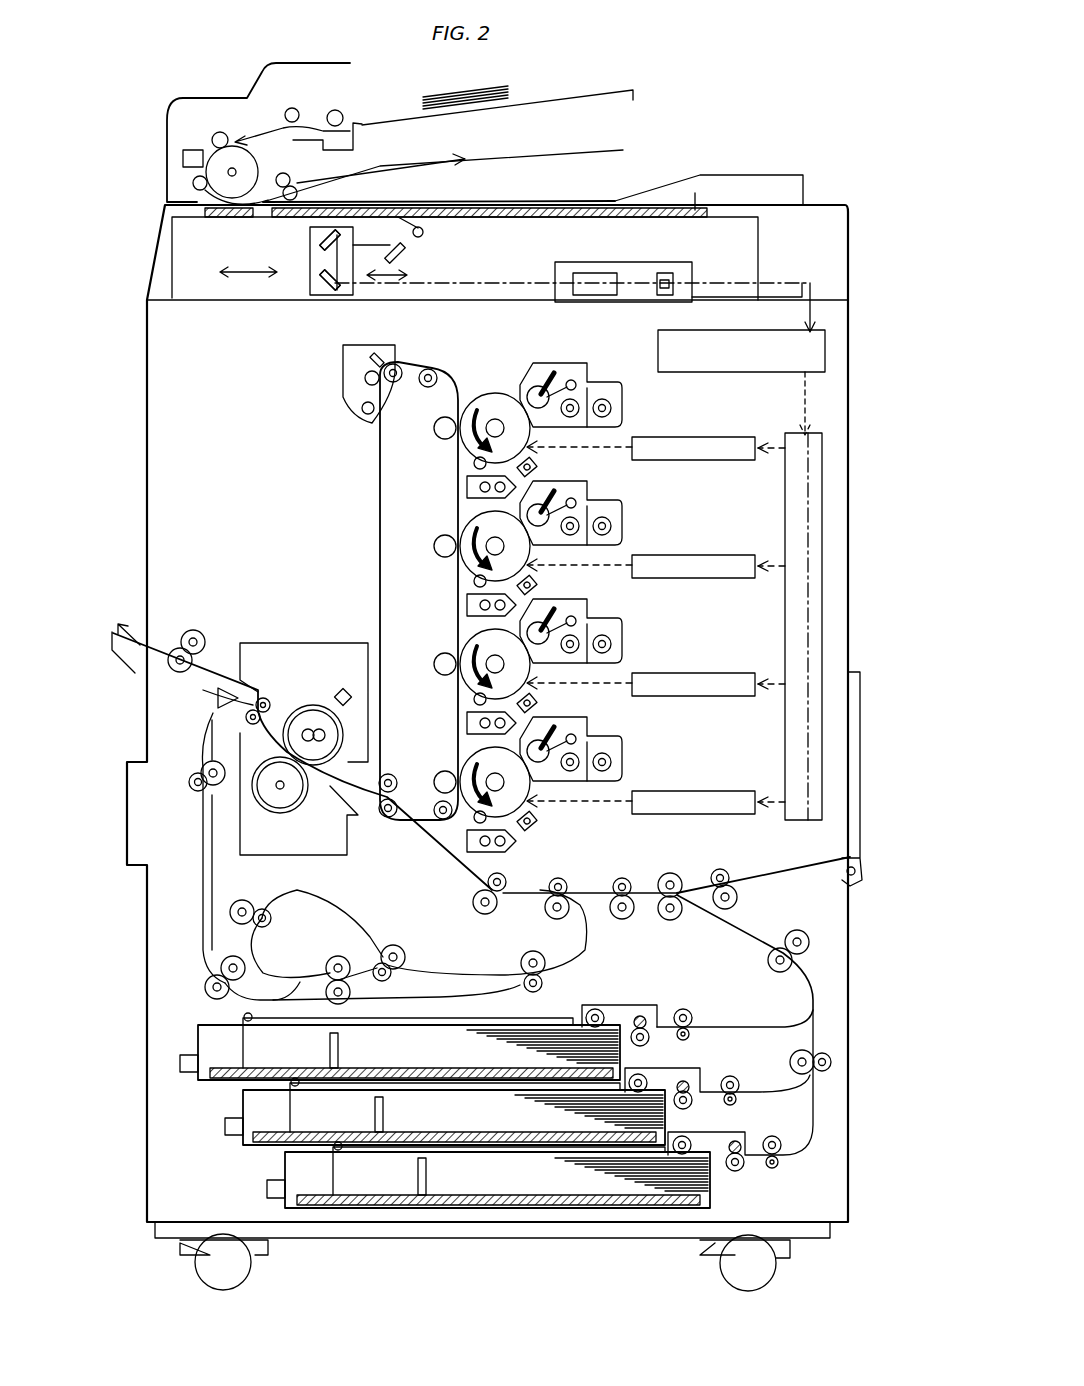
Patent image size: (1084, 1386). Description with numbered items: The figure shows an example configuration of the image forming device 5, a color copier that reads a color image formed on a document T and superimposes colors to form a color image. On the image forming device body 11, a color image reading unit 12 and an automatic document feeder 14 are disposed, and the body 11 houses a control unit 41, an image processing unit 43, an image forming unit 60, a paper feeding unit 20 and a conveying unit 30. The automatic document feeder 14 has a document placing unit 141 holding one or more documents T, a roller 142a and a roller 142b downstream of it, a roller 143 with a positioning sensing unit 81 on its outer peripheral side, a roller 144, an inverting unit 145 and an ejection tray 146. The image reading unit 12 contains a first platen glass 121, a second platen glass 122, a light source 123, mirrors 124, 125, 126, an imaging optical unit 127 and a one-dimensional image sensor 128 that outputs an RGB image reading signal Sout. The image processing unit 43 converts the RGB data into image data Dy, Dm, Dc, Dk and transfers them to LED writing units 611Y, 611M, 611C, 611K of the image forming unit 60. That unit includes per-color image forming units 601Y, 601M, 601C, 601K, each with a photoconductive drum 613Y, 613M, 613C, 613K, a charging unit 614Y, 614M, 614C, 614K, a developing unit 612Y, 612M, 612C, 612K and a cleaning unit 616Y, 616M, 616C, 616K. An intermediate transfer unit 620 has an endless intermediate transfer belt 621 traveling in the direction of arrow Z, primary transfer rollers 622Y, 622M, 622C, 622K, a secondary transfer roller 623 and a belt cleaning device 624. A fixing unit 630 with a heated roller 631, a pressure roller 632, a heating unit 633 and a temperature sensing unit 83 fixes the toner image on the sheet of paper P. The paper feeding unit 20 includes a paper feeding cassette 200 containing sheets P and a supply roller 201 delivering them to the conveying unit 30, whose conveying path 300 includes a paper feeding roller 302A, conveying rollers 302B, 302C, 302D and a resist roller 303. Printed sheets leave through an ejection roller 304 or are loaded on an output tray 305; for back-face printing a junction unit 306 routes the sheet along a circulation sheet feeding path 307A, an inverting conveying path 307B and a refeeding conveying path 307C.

The image forming device 5 is at (160, 50).
The image forming device body 11 is at (850, 340).
The color image reading unit 12 is at (820, 215).
The automatic document feeder 14 is at (655, 94).
The paper feeding unit 20 is at (495, 1082).
The conveying unit 30 is at (165, 927).
The control unit 41 is at (803, 370).
The image processing unit 43 is at (815, 562).
The image forming unit 60 is at (822, 447).
The positioning sensing unit 81 is at (170, 176).
The temperature sensing unit 83 is at (346, 690).
The first platen glass 121 is at (690, 188).
The second platen glass 122 is at (222, 217).
The light source 123 is at (424, 232).
The mirror 124 is at (408, 258).
The mirror 125 is at (318, 240).
The mirror 126 is at (328, 300).
The imaging optical unit 127 is at (597, 280).
The image sensor 128 is at (672, 281).
The document placing unit 141 is at (533, 99).
The roller 142a is at (345, 112).
The roller 142b is at (298, 110).
The roller 143 is at (213, 148).
The roller 144 is at (300, 176).
The inverting unit 145 is at (503, 200).
The ejection tray 146 is at (560, 150).
The paper feeding cassette 200 is at (196, 1070).
The supply roller 201 is at (625, 1008).
The conveying path 300 is at (742, 878).
The paper feeding roller 302A is at (694, 1016).
The conveying roller 302B is at (827, 1072).
The conveying roller 302C is at (632, 920).
The conveying roller 302D is at (628, 878).
The resist roller 303 is at (487, 913).
The ejection roller 304 is at (188, 630).
The output tray 305 is at (128, 675).
The junction unit 306 is at (215, 710).
The circulation sheet feeding path 307A is at (207, 850).
The inverting conveying path 307B is at (668, 992).
The refeeding conveying path 307C is at (385, 955).
The image forming unit 601Y is at (600, 372).
The image forming unit 601M is at (604, 496).
The image forming unit 601C is at (604, 617).
The image forming unit 601K is at (604, 736).
The LED writing unit 611Y is at (730, 437).
The LED writing unit 611M is at (735, 553).
The LED writing unit 611C is at (733, 671).
The LED writing unit 611K is at (733, 789).
The developing unit 612Y is at (622, 410).
The developing unit 612M is at (625, 530).
The developing unit 612C is at (627, 648).
The developing unit 612K is at (627, 766).
The photoconductive drum 613Y is at (490, 400).
The photoconductive drum 613M is at (480, 525).
The photoconductive drum 613C is at (475, 640).
The photoconductive drum 613K is at (478, 758).
The charging unit 614Y is at (538, 470).
The charging unit 614M is at (538, 588).
The charging unit 614C is at (538, 706).
The charging unit 614K is at (538, 824).
The cleaning unit 616Y is at (462, 478).
The cleaning unit 616M is at (465, 598).
The cleaning unit 616C is at (465, 712).
The cleaning unit 616K is at (465, 852).
The intermediate transfer unit 620 is at (370, 591).
The intermediate transfer belt 621 is at (380, 500).
The primary transfer roller 622Y is at (440, 430).
The primary transfer roller 622M is at (440, 546).
The primary transfer roller 622C is at (440, 664).
The primary transfer roller 622K is at (440, 782).
The secondary transfer roller 623 is at (385, 820).
The belt cleaning device 624 is at (348, 422).
The fixing unit 630 is at (304, 718).
The heated roller 631 is at (318, 712).
The pressure roller 632 is at (302, 808).
The heating unit 633 is at (306, 728).
The yellow image data Dy is at (772, 447).
The magenta image data Dm is at (766, 565).
The cyan image data Dc is at (766, 683).
The black image data Dk is at (766, 801).
The sheet of paper P is at (606, 1053).
The document T is at (466, 88).
The direction of belt travel Z is at (394, 546).
The image reading signal Sout is at (790, 283).